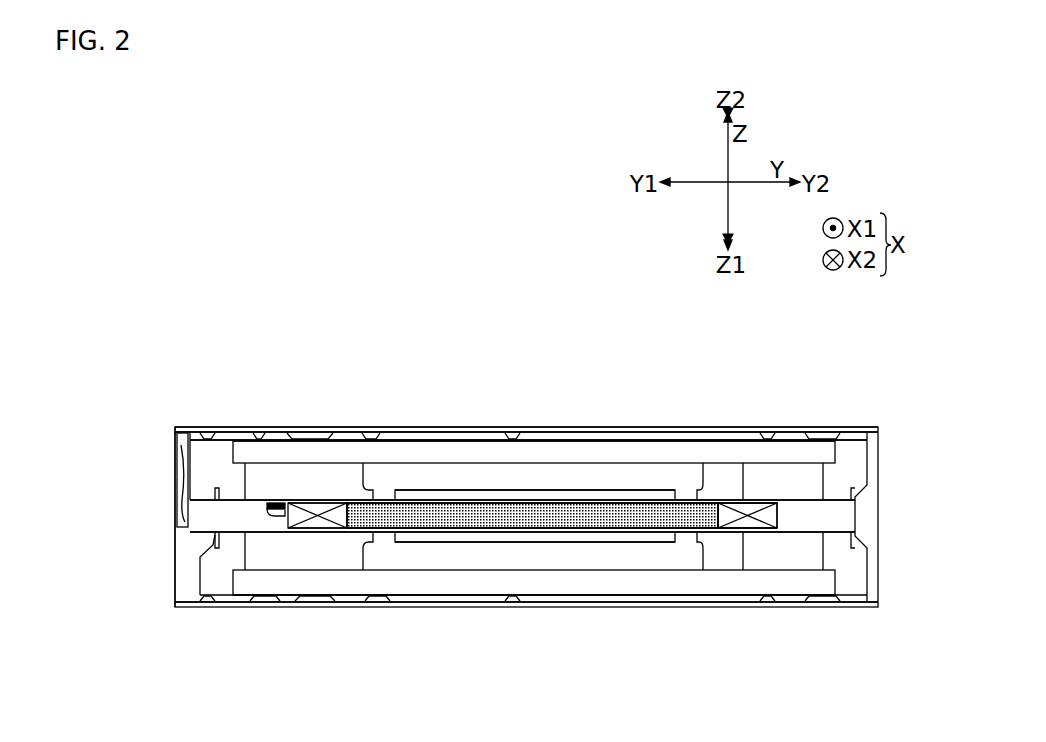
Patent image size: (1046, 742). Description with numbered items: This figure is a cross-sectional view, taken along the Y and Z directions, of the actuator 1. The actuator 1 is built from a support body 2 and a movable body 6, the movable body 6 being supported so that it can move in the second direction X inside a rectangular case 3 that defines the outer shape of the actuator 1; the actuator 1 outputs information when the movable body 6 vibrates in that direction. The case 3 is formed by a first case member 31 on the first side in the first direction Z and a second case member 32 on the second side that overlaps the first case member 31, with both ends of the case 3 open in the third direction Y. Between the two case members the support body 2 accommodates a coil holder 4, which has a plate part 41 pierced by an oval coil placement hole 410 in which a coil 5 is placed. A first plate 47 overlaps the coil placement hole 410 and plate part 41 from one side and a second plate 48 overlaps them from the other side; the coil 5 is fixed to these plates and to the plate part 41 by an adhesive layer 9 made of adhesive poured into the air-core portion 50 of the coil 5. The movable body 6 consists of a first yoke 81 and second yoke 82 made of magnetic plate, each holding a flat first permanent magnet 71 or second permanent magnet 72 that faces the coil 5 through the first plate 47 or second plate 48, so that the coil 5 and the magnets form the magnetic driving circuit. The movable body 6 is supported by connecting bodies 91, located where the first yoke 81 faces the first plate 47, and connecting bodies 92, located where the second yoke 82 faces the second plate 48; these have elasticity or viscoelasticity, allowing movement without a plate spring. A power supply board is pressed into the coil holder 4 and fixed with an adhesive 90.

The actuator 1 is at (227, 357).
The support body 2 is at (463, 348).
The case 3 is at (433, 383).
The first case member 31 is at (472, 605).
The second case member 32 is at (430, 428).
The coil holder 4 is at (178, 547).
The plate part 41 is at (222, 518).
The coil placement hole 410 is at (783, 518).
The first plate 47 is at (573, 532).
The second plate 48 is at (515, 502).
The coil 5 is at (727, 503).
The air-core portion 50 is at (730, 530).
The movable body 6 is at (670, 684).
The first permanent magnet 71 is at (550, 562).
The second permanent magnet 72 is at (663, 480).
The first yoke 81 is at (508, 583).
The second yoke 82 is at (623, 452).
The adhesive layer 9 is at (532, 515).
The adhesive 90 is at (257, 505).
The connecting bodies 91 is at (302, 548).
The connecting bodies 92 is at (275, 473).